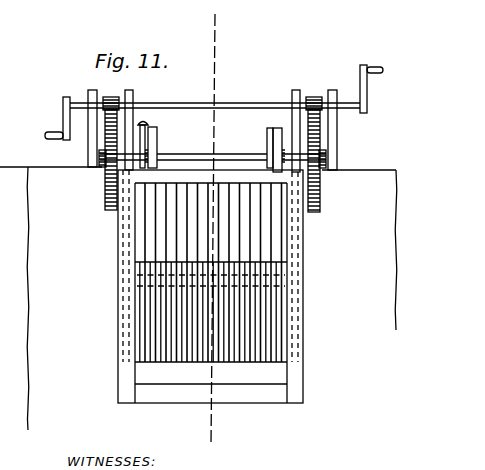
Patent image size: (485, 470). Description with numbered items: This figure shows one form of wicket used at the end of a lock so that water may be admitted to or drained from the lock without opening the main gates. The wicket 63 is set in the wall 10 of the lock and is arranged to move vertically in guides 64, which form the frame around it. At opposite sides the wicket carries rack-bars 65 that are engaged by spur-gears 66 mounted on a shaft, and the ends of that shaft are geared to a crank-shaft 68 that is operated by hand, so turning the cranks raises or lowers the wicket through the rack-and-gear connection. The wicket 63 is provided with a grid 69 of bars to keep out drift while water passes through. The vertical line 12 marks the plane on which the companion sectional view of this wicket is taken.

The wall of the lock 10 is at (337, 287).
The section line 12 12 is at (208, 233).
The wicket 63 is at (239, 272).
The guides 64 is at (222, 152).
The rack-bars 65 is at (155, 131).
The spur-gears 66 is at (153, 153).
The crank-shaft 68 is at (241, 98).
The grid 69 is at (228, 235).